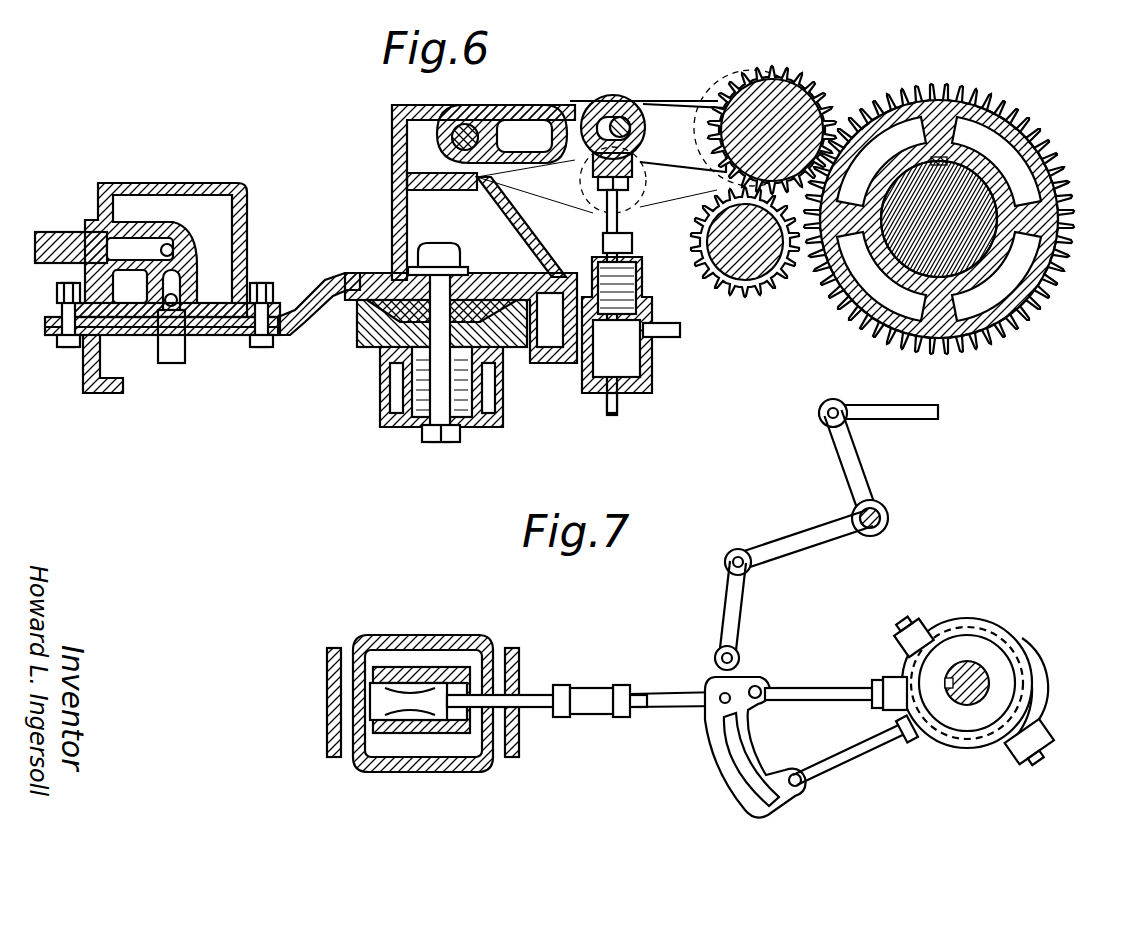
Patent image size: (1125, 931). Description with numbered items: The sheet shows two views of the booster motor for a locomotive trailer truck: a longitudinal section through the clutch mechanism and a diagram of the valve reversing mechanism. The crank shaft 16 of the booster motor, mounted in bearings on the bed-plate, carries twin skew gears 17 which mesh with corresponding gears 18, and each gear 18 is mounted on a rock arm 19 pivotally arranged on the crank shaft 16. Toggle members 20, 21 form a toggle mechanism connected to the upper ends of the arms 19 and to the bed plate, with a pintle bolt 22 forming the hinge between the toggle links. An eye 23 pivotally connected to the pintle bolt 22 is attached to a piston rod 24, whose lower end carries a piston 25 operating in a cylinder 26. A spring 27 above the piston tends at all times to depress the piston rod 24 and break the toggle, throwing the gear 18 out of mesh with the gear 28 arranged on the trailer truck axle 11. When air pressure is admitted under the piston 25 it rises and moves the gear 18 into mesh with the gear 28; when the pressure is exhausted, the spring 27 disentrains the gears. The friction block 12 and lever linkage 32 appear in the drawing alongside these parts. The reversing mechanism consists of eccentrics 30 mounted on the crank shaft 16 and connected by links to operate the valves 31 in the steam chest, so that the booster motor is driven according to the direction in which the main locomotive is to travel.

In FIG. 6, the axle 11 is at (980, 212).
In FIG. 6, the friction block 12 is at (480, 305).
In FIG. 6, the crank shaft 16 is at (763, 292).
In FIG. 7, the crank shaft 16 is at (1000, 680).
In FIG. 6, the twin skew gears 17 is at (722, 290).
In FIG. 6, the gear 18 is at (800, 85).
In FIG. 6, the rock arm 19 is at (717, 188).
In FIG. 6, the toggle member 20 is at (680, 95).
In FIG. 6, the toggle member 21 is at (528, 103).
In FIG. 6, the pintle bolt 22 is at (628, 118).
In FIG. 6, the eye 23 is at (603, 112).
In FIG. 6, the piston rod 24 is at (632, 243).
In FIG. 6, the piston 25 is at (607, 320).
In FIG. 6, the cylinder 26 is at (655, 372).
In FIG. 6, the spring 27 is at (642, 290).
In FIG. 6, the gear 28 is at (1003, 108).
In FIG. 7, the eccentric 30 is at (1012, 630).
In FIG. 7, the valve 31 is at (524, 703).
In FIG. 7, the lever linkage 32 is at (812, 555).